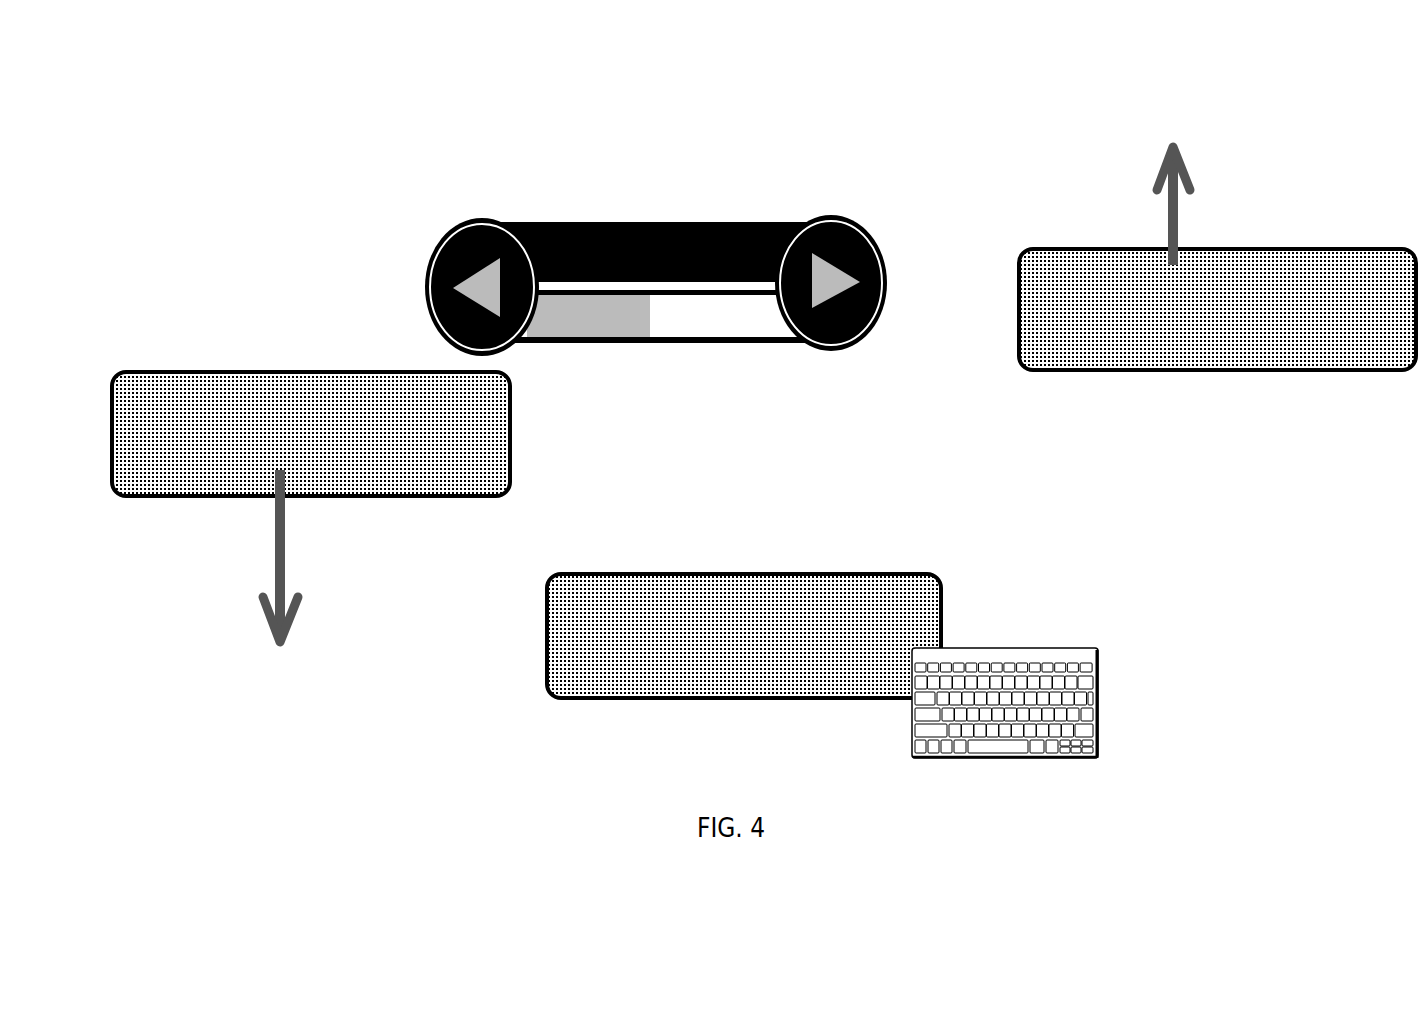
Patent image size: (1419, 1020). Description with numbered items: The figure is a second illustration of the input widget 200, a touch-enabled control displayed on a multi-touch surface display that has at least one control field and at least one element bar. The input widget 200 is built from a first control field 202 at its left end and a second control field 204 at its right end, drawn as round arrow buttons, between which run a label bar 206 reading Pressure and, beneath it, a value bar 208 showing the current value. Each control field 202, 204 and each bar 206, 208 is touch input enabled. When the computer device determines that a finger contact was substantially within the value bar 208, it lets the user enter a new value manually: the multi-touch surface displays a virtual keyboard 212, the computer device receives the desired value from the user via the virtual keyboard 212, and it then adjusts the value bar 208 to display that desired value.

The input widget 200 is at (912, 80).
The first control field 202 is at (452, 220).
The second control field 204 is at (865, 355).
The label bar 206 is at (665, 220).
The value bar 208 is at (650, 353).
The virtual keyboard 212 is at (1093, 627).